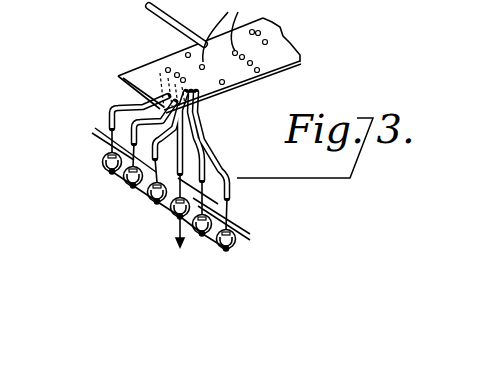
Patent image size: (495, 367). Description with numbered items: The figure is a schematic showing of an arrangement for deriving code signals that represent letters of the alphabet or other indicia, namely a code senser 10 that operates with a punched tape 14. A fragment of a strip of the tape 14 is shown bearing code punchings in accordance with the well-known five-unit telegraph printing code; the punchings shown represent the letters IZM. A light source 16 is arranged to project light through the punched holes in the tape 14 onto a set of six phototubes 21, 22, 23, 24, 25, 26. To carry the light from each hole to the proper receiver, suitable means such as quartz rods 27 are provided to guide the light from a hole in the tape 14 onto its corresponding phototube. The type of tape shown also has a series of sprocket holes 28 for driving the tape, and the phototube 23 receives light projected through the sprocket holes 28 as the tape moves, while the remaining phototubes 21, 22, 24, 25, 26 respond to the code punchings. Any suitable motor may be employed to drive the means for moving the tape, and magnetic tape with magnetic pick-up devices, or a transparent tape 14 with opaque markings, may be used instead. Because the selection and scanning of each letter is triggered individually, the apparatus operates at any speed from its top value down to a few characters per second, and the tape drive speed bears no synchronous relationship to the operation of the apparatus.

The code senser 10 is at (222, 127).
The punched tape 14 is at (300, 63).
The light source 16 is at (157, 23).
The phototube 21 is at (102, 163).
The phototube 22 is at (123, 190).
The phototube 23 is at (155, 206).
The phototube 24 is at (173, 220).
The phototube 25 is at (223, 212).
The phototube 26 is at (233, 249).
The quartz rods 27 is at (112, 107).
The sprocket holes 28 is at (224, 31).